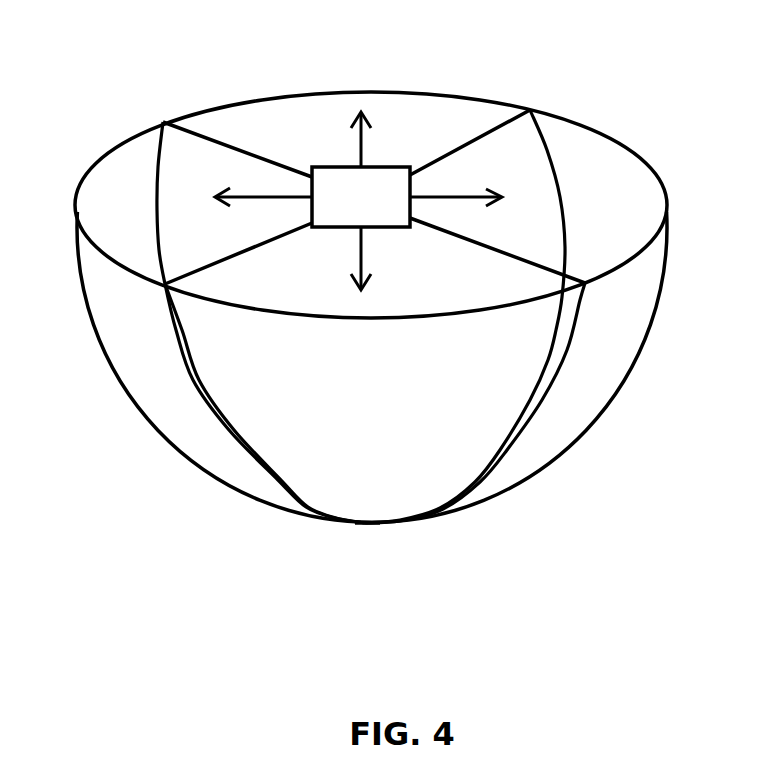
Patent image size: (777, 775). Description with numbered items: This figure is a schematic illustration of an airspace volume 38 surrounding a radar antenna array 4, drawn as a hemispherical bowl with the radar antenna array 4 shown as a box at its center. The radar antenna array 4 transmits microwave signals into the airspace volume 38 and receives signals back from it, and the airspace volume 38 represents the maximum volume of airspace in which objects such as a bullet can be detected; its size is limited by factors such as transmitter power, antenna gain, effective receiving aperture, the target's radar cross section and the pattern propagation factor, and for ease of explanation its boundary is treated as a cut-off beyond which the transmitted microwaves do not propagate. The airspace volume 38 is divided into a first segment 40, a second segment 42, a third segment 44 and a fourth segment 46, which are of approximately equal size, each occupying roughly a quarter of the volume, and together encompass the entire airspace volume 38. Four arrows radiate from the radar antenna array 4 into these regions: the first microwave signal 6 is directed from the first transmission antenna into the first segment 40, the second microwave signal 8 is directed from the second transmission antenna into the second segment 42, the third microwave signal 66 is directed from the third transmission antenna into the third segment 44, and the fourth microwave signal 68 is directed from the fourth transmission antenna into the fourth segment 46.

The radar antenna array 4 is at (374, 197).
The first microwave signal 6 is at (257, 197).
The second microwave signal 8 is at (365, 262).
The airspace volume 38 is at (648, 434).
The first segment 40 is at (97, 177).
The second segment 42 is at (397, 510).
The third segment 44 is at (643, 177).
The fourth segment 46 is at (245, 107).
The third microwave signal 66 is at (458, 198).
The fourth microwave signal 68 is at (357, 145).